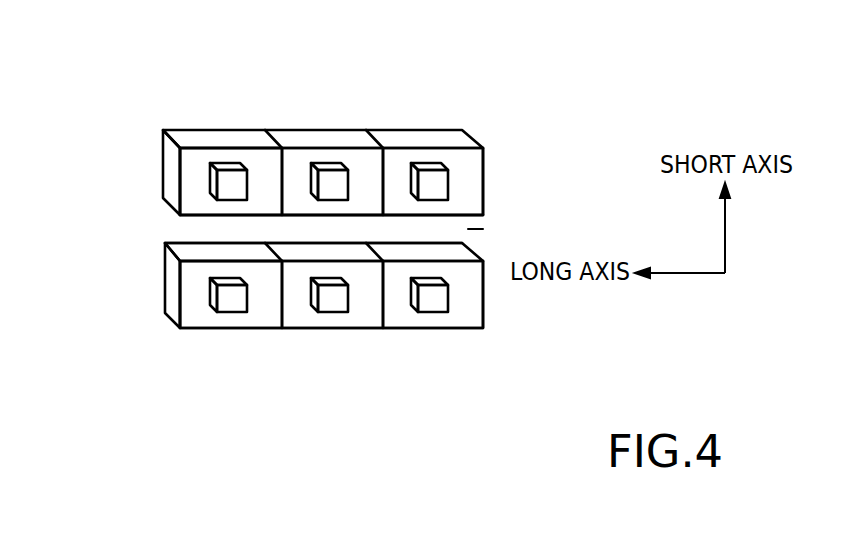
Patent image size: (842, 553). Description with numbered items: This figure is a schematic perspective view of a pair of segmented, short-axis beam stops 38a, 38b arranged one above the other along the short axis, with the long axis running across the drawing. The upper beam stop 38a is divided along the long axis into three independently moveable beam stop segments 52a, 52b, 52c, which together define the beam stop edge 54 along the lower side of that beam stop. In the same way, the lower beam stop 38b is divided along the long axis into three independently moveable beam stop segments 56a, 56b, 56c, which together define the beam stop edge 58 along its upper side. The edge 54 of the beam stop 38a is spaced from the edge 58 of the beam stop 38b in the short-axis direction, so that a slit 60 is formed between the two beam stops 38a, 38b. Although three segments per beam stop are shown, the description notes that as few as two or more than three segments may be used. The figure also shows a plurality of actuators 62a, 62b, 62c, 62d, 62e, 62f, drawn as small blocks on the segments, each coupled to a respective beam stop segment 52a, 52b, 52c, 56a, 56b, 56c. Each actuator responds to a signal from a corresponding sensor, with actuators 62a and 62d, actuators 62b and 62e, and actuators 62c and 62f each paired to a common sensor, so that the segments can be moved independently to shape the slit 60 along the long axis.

The segmented beam stop 38a is at (263, 123).
The segmented beam stop 38b is at (283, 326).
The beam stop segment 52a is at (197, 130).
The beam stop segment 52b is at (288, 130).
The beam stop segment 52c is at (390, 130).
The beam stop edge 54 is at (200, 216).
The beam stop segment 56a is at (198, 313).
The beam stop segment 56b is at (285, 313).
The beam stop segment 56c is at (463, 315).
The beam stop edge 58 is at (192, 241).
The slit 60 is at (468, 229).
The actuator 62a is at (229, 182).
The actuator 62b is at (330, 182).
The actuator 62c is at (433, 182).
The actuator 62d is at (230, 300).
The actuator 62e is at (332, 300).
The actuator 62f is at (432, 300).